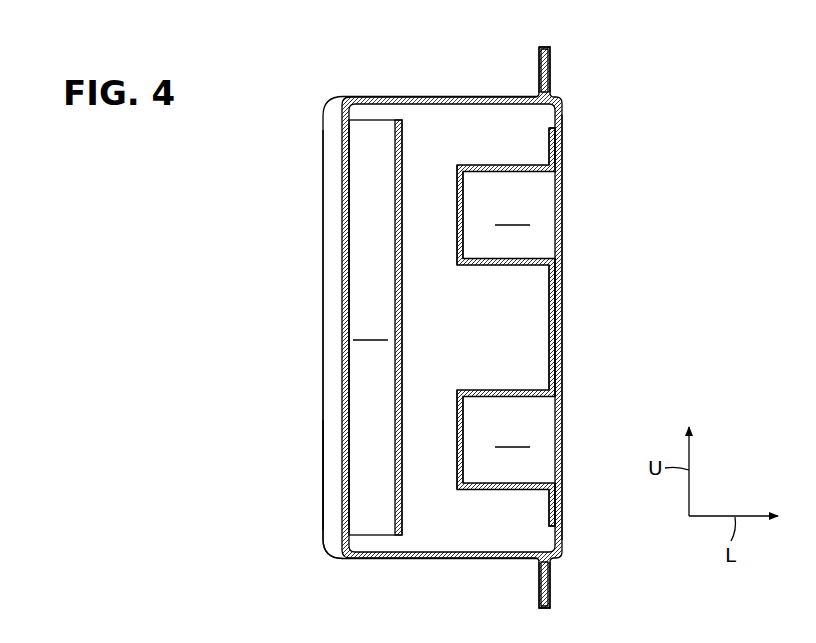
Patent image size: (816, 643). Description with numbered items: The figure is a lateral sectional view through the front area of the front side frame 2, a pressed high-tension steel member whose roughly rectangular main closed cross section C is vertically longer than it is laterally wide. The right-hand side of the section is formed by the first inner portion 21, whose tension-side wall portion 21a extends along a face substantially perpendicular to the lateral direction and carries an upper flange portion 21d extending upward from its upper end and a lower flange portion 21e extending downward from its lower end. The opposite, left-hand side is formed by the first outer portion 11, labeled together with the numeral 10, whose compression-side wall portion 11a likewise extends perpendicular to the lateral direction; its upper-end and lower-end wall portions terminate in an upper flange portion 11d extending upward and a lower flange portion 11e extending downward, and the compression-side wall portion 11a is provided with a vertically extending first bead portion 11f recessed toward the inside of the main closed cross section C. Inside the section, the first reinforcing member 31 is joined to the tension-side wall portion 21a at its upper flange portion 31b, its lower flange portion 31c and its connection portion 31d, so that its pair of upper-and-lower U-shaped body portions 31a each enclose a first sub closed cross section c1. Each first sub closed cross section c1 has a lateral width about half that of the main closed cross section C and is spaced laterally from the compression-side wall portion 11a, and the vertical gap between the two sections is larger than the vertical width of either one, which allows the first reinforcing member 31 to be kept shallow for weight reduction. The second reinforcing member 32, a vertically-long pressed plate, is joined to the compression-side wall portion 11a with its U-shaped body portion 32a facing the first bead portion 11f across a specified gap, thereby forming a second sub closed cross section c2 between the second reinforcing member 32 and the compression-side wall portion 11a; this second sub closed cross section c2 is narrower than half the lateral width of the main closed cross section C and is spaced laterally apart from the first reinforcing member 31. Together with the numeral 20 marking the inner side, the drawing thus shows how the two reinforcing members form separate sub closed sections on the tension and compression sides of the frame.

The front side frame 2 is at (603, 34).
The holder 10 is at (369, 328).
The first outer portion 11 is at (318, 357).
The compression-side wall portion 11a is at (323, 304).
The upper flange portion 11d is at (538, 66).
The lower flange portion 11e is at (539, 590).
The first bead portion 11f is at (332, 442).
The frame 20 is at (507, 327).
The first inner portion 21 is at (566, 347).
The tension-side wall portion 21a is at (563, 301).
The upper flange portion 21d is at (550, 70).
The lower flange portion 21e is at (550, 590).
The first reinforcing member 31 is at (540, 257).
The body portion 31a is at (457, 176).
The upper flange portion 31b is at (549, 140).
The lower flange portion 31c is at (549, 506).
The connection portion 31d is at (549, 308).
The second reinforcing member 32 is at (360, 113).
The body portion 32a is at (345, 160).
The main closed cross section C is at (454, 114).
The first sub closed cross section c1 is at (512, 323).
The second sub closed cross section c2 is at (370, 327).